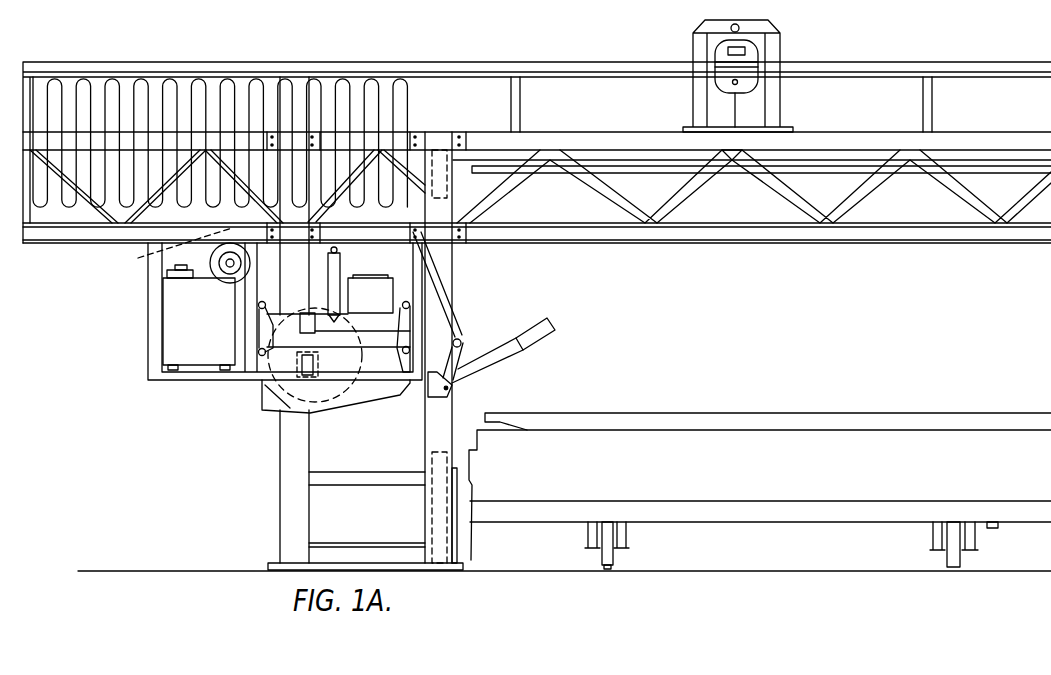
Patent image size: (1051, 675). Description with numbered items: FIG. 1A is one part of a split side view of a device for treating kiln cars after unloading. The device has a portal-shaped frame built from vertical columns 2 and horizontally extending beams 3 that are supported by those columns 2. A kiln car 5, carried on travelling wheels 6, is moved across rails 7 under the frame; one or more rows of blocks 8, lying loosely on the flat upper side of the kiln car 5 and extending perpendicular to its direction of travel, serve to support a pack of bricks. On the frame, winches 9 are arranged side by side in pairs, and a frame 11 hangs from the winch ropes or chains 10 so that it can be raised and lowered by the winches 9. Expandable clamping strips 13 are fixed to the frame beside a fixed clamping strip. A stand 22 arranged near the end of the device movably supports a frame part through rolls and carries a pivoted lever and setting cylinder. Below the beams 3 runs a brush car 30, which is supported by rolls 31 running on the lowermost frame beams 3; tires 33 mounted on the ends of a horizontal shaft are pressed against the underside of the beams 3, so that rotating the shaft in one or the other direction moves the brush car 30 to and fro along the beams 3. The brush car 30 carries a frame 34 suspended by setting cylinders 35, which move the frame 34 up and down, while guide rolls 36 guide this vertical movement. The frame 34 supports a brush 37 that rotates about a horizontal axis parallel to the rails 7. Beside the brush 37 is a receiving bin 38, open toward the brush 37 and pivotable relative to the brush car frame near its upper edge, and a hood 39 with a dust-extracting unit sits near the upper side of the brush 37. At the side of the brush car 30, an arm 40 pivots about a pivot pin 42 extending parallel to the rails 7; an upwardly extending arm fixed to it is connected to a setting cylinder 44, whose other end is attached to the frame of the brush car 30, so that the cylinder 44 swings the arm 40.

The vertical column 2 is at (280, 477).
The frame beam 3 is at (778, 235).
The kiln car 5 is at (783, 512).
The travelling wheel 6 is at (612, 560).
The rail 7 is at (608, 568).
The row of blocks 8 is at (690, 413).
The winch 9 is at (750, 48).
The winch rope or chain 10 is at (738, 113).
The frame 11 is at (973, 152).
The expandable clamping strip 13 is at (735, 165).
The stand 22 is at (460, 507).
The brush car 30 is at (183, 385).
The roll 31 is at (174, 253).
The tire 33 is at (228, 283).
The frame 34 is at (363, 318).
The setting cylinder 35 is at (337, 302).
The guide roll 36 is at (263, 303).
The brush 37 is at (262, 407).
The receiving bin 38 is at (378, 400).
The hood 39 is at (323, 315).
The arm 40 is at (505, 355).
The pivot pin 42 is at (455, 392).
The setting cylinder 44 is at (455, 322).